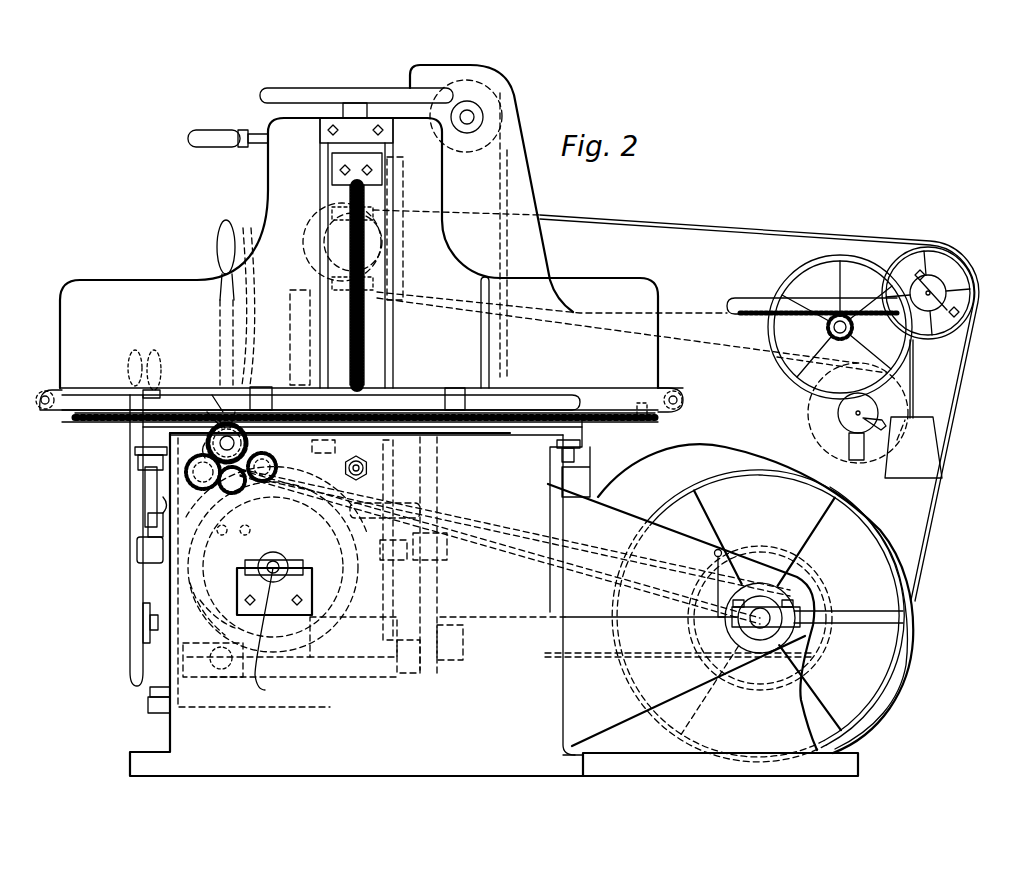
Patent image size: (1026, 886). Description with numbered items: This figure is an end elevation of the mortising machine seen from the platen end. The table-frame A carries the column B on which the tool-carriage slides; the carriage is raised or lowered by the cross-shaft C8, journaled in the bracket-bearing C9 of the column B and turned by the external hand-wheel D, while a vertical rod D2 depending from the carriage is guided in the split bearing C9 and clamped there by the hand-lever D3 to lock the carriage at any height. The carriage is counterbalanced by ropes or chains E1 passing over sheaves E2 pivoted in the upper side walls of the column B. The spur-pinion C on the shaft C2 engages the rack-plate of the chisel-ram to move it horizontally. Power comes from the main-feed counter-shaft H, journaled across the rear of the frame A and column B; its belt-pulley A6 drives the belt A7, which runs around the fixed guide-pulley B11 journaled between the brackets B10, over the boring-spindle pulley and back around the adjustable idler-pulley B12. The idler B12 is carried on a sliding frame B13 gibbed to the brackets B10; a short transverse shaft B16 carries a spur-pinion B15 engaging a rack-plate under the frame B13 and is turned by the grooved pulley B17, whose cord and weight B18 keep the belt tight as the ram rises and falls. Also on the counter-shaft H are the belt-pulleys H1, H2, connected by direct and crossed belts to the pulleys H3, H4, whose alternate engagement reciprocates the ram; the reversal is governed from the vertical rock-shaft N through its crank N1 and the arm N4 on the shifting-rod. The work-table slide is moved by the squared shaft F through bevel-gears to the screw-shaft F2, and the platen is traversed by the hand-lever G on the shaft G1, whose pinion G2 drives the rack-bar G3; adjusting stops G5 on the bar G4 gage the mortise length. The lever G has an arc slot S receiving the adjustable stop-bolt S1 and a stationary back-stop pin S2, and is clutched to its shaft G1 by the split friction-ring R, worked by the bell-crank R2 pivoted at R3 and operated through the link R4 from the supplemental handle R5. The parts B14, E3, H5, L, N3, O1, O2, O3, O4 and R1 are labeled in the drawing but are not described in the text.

The table-frame A is at (447, 432).
The belt-pulley A6 is at (893, 665).
The belt A7 is at (676, 226).
The column B is at (491, 188).
The brackets B10 is at (699, 394).
The fixed guide-pulley B11 is at (853, 455).
The adjustable idler-pulley B12 is at (962, 294).
The sliding frame B13 is at (738, 303).
The rack teeth B14 is at (743, 318).
The spur-pinion B15 is at (830, 330).
The short transverse shaft B16 is at (856, 332).
The external grooved pulley B17 is at (814, 266).
The weight B18 is at (913, 409).
The spur-pinion C is at (291, 318).
The shaft C2 is at (323, 453).
The cross-shaft C8 is at (453, 521).
The bracket-bearing C9 is at (405, 490).
The hand-wheel D is at (130, 575).
The vertical rod D2 is at (387, 580).
The hand-lever D3 is at (243, 508).
The wire ropes or chains E1 is at (501, 257).
The sheaves E2 is at (488, 100).
The pivot pin E3 is at (474, 115).
The projecting shaft F is at (137, 465).
The screw-shaft F2 is at (360, 456).
The hand-lever G is at (218, 247).
The shaft G1 is at (283, 445).
The pinion G2 is at (203, 438).
The rack-bar G3 is at (114, 421).
The rod or bar G4 is at (321, 403).
The adjusting stops G5 is at (357, 398).
The main-feed counter-shaft H is at (767, 620).
The belt-pulley H1 is at (787, 587).
The belt-pulley H2 is at (720, 600).
The belt-pulley H3 is at (213, 623).
The belt-pulley H4 is at (352, 603).
The shaft bearing H5 is at (263, 577).
The lever L is at (264, 636).
The vertical rock-shaft N is at (437, 595).
The crank N1 is at (357, 672).
The roller N3 is at (203, 683).
The arm N4 is at (240, 617).
The pin O1 is at (244, 522).
The pin O2 is at (224, 522).
The block O3 is at (137, 548).
The shaft O4 is at (145, 492).
The split friction-ring clutch R is at (247, 443).
The pawl R1 is at (208, 414).
The small bell-crank R2 is at (232, 413).
The pivot R3 is at (218, 413).
The link R4 is at (223, 402).
The supplemental bell-crank handle R5 is at (243, 230).
The concentric arc slot S is at (197, 474).
The adjustable forward stop or indicator-bolt S1 is at (218, 484).
The stationary pin S2 is at (278, 468).